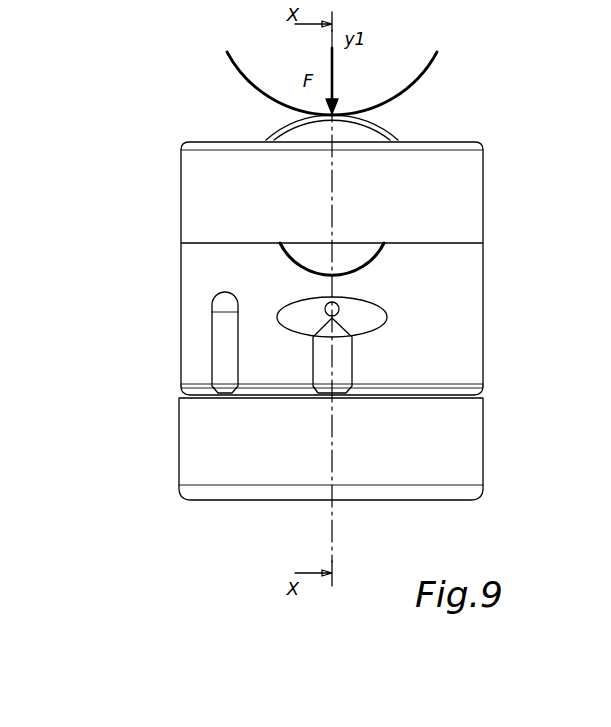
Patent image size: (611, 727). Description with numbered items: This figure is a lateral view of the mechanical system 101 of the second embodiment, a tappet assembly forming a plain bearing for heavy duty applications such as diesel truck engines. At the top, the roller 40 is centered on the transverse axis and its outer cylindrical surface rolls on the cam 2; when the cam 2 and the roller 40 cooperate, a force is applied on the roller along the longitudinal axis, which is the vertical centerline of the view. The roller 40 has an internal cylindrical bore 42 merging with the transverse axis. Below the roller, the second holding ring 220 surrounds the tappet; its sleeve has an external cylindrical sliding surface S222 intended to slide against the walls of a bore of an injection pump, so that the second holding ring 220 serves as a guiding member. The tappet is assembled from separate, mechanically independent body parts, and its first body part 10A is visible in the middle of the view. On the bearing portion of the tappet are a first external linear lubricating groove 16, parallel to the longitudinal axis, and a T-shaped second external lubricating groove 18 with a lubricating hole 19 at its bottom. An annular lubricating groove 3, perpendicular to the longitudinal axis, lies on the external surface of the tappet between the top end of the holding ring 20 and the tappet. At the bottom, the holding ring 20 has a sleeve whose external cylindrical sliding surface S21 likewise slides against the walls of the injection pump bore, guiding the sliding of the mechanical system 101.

The mechanical system 101 is at (150, 118).
The cam 2 is at (426, 76).
The roller 40 is at (372, 133).
The internal cylindrical bore 42 is at (268, 127).
The second holding ring 220 is at (460, 200).
The external cylindrical sliding surface S222 is at (206, 194).
The lubricating groove 3 is at (487, 393).
The first body part 10A is at (466, 255).
The first external linear lubricating groove 16 is at (224, 322).
The lubricating hole 19 is at (342, 302).
The second external lubricating groove 18 is at (347, 353).
The holding ring 20 is at (447, 440).
The external cylindrical sliding surface S21 is at (225, 437).